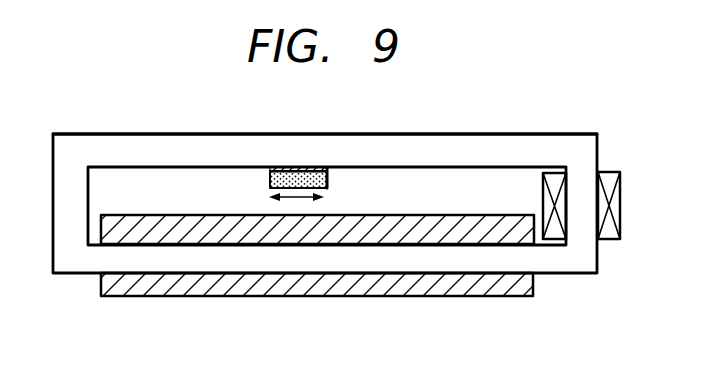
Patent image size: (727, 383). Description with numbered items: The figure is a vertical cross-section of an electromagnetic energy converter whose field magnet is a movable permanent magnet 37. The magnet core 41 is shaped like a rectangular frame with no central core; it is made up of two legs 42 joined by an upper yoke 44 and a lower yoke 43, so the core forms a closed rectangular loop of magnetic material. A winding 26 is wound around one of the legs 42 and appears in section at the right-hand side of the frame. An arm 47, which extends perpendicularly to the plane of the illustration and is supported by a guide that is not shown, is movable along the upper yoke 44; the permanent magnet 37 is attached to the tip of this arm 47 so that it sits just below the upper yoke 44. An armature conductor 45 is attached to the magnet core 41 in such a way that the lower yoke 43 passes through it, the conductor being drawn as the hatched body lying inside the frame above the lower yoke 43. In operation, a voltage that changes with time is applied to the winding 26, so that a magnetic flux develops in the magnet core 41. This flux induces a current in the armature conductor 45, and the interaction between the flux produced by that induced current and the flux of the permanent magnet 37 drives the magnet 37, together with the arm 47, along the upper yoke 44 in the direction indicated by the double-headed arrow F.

The magnet core 41 is at (567, 125).
The upper yoke 44 is at (461, 143).
The legs 42 is at (580, 177).
The armature conductor 45 is at (523, 281).
The lower yoke 43 is at (462, 262).
The winding 26 is at (612, 199).
The permanent magnet 37 is at (330, 179).
The arm 47 is at (273, 167).
The direction of force F is at (297, 199).